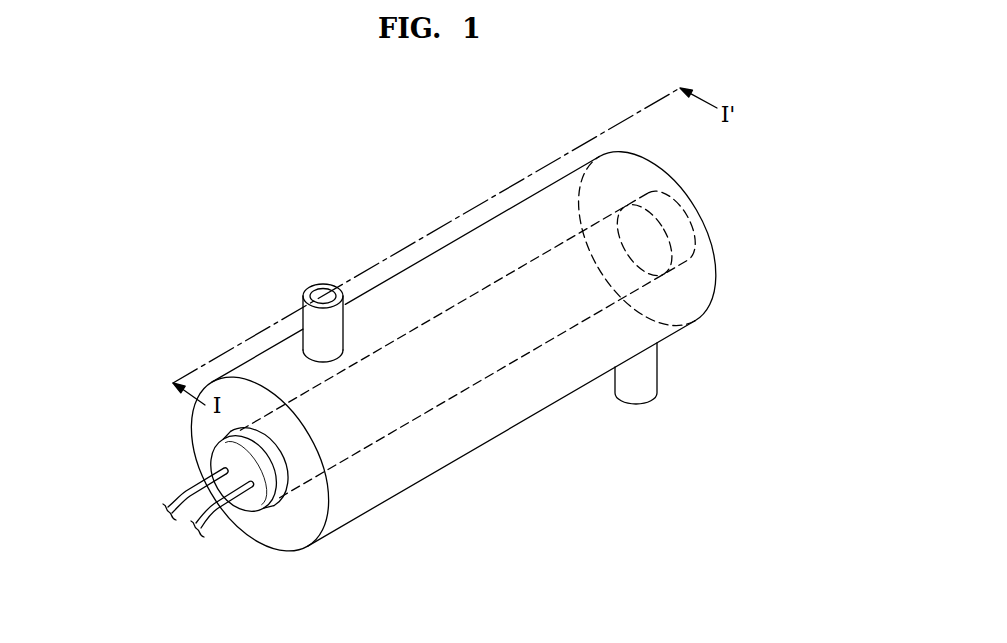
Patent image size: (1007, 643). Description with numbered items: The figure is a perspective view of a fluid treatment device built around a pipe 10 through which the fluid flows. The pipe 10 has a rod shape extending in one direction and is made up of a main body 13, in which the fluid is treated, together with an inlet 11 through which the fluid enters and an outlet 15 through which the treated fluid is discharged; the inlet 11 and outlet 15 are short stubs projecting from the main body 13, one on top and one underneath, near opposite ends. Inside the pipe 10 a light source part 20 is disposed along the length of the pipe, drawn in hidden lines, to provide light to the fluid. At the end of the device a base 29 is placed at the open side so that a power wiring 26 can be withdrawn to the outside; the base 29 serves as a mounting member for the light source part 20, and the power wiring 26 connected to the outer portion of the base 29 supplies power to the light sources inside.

The pipe 10 is at (445, 385).
The inlet 11 is at (312, 284).
The main body 13 is at (549, 392).
The outlet 15 is at (645, 392).
The light source part 20 is at (446, 401).
The power wiring 26 is at (183, 488).
The base 29 is at (273, 485).